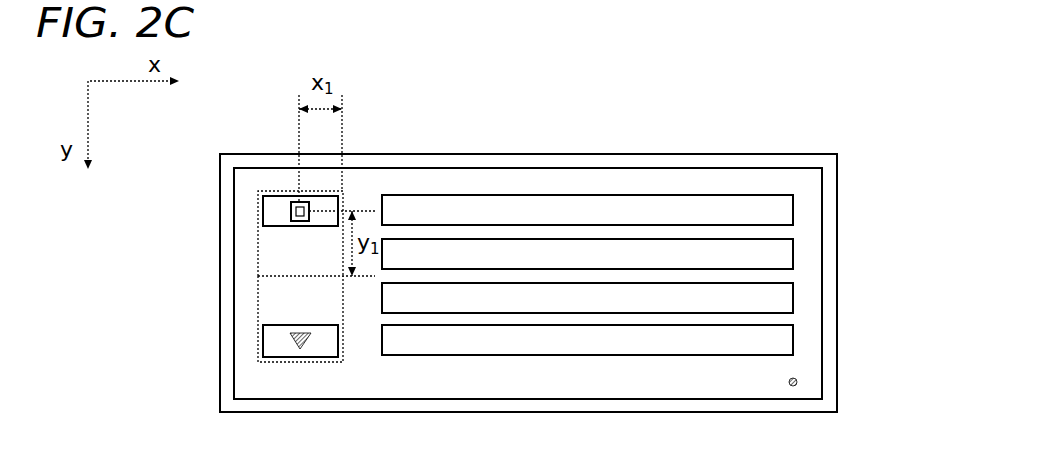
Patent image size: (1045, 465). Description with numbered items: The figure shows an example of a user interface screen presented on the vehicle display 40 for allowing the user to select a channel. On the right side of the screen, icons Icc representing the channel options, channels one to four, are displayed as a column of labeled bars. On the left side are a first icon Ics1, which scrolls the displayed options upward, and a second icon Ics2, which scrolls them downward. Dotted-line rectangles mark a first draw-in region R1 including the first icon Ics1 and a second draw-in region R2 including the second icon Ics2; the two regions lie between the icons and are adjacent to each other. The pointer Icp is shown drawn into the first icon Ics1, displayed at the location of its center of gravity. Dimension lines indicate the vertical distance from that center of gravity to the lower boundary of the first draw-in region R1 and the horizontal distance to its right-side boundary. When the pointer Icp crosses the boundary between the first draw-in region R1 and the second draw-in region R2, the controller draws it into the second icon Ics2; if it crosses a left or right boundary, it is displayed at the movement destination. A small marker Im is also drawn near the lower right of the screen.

The display 40 is at (218, 192).
The pointer Icp is at (289, 203).
The first icon Ics1 is at (263, 210).
The second icon Ics2 is at (263, 343).
The first draw-in region R1 is at (221, 252).
The second draw-in region R2 is at (221, 319).
The icons representing channel options Icc is at (793, 337).
The marker image Im is at (797, 385).